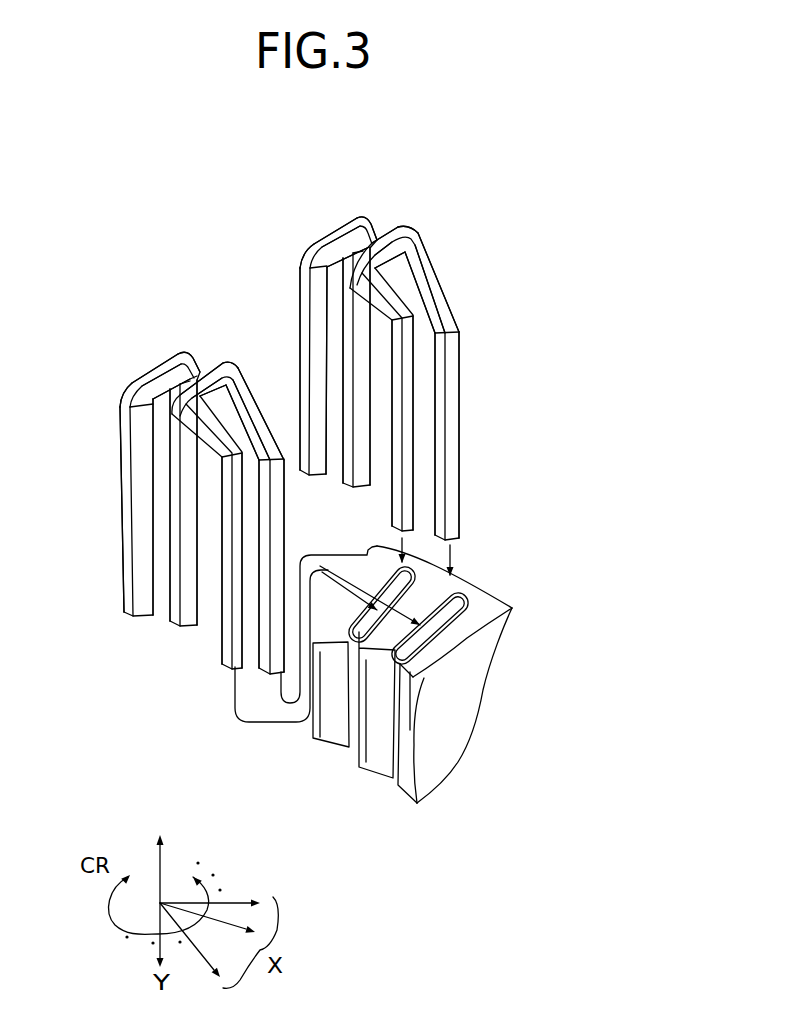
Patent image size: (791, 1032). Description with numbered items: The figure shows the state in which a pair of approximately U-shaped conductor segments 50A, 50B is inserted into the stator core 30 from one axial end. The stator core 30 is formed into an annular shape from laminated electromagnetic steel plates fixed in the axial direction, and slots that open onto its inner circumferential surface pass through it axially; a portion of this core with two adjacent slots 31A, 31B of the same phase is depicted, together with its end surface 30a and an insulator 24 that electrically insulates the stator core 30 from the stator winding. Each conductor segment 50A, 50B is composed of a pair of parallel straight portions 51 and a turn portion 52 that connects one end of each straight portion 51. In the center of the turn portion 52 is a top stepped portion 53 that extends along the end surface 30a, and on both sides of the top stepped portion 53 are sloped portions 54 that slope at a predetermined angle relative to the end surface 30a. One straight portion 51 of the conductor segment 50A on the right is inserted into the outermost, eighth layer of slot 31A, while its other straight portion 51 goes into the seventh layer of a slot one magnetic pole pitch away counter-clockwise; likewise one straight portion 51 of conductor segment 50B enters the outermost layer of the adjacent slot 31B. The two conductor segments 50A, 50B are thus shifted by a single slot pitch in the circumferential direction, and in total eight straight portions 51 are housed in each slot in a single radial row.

The insulator 24 is at (430, 633).
The stator core 30 is at (421, 682).
The end surface of the stator core 30a is at (482, 600).
The slot 31A is at (400, 787).
The slot 31B is at (351, 750).
The conductor segment 50A is at (257, 380).
The conductor segment 50B is at (141, 375).
The straight portion 51 is at (263, 550).
The turn portion 52 is at (140, 366).
The top stepped portion 53 is at (160, 366).
The sloped portion 54 is at (145, 356).